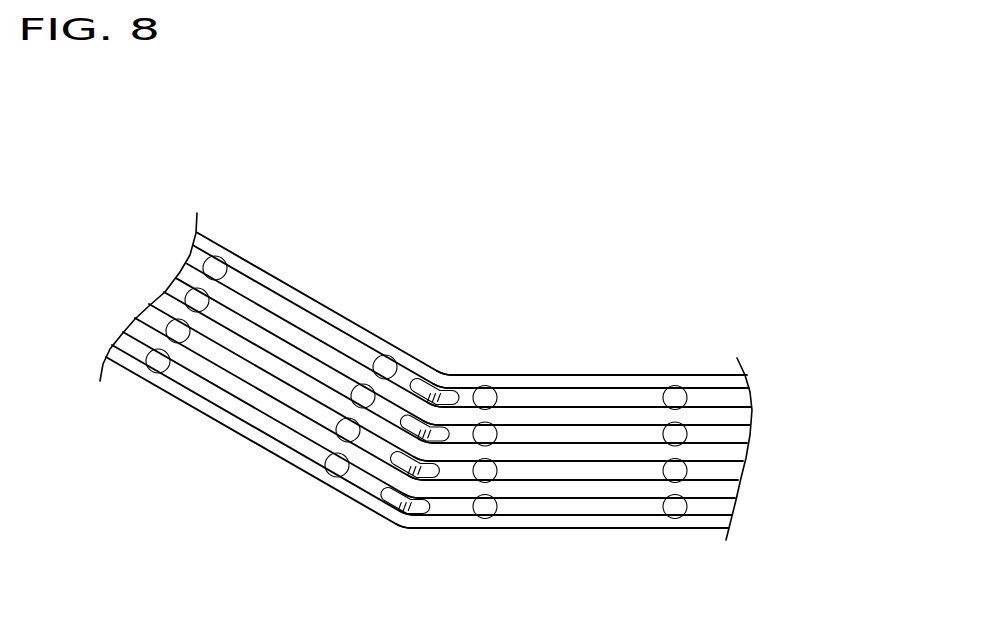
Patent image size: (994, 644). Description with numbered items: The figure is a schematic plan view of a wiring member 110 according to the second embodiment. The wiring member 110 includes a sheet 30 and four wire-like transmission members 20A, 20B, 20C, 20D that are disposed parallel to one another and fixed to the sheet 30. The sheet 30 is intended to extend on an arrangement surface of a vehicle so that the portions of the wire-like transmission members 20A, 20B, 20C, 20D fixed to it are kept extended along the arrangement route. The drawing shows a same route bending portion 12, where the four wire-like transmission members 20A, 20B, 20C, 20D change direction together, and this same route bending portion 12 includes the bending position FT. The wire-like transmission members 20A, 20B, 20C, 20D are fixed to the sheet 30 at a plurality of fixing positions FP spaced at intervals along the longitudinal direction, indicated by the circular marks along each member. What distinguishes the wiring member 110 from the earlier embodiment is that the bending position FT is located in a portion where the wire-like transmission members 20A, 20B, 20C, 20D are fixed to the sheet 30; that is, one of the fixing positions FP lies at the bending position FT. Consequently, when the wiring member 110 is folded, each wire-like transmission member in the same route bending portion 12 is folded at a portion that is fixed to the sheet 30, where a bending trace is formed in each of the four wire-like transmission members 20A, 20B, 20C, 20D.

The wiring member 110 is at (426, 355).
The same route bending portion 12 is at (441, 370).
The sheet 30 is at (528, 376).
The wire-like transmission member 20A is at (557, 510).
The wire-like transmission member 20B is at (615, 470).
The wire-like transmission member 20C is at (582, 435).
The wire-like transmission member 20D is at (646, 397).
The fixing position FP is at (356, 440).
The bending position FT is at (402, 465).